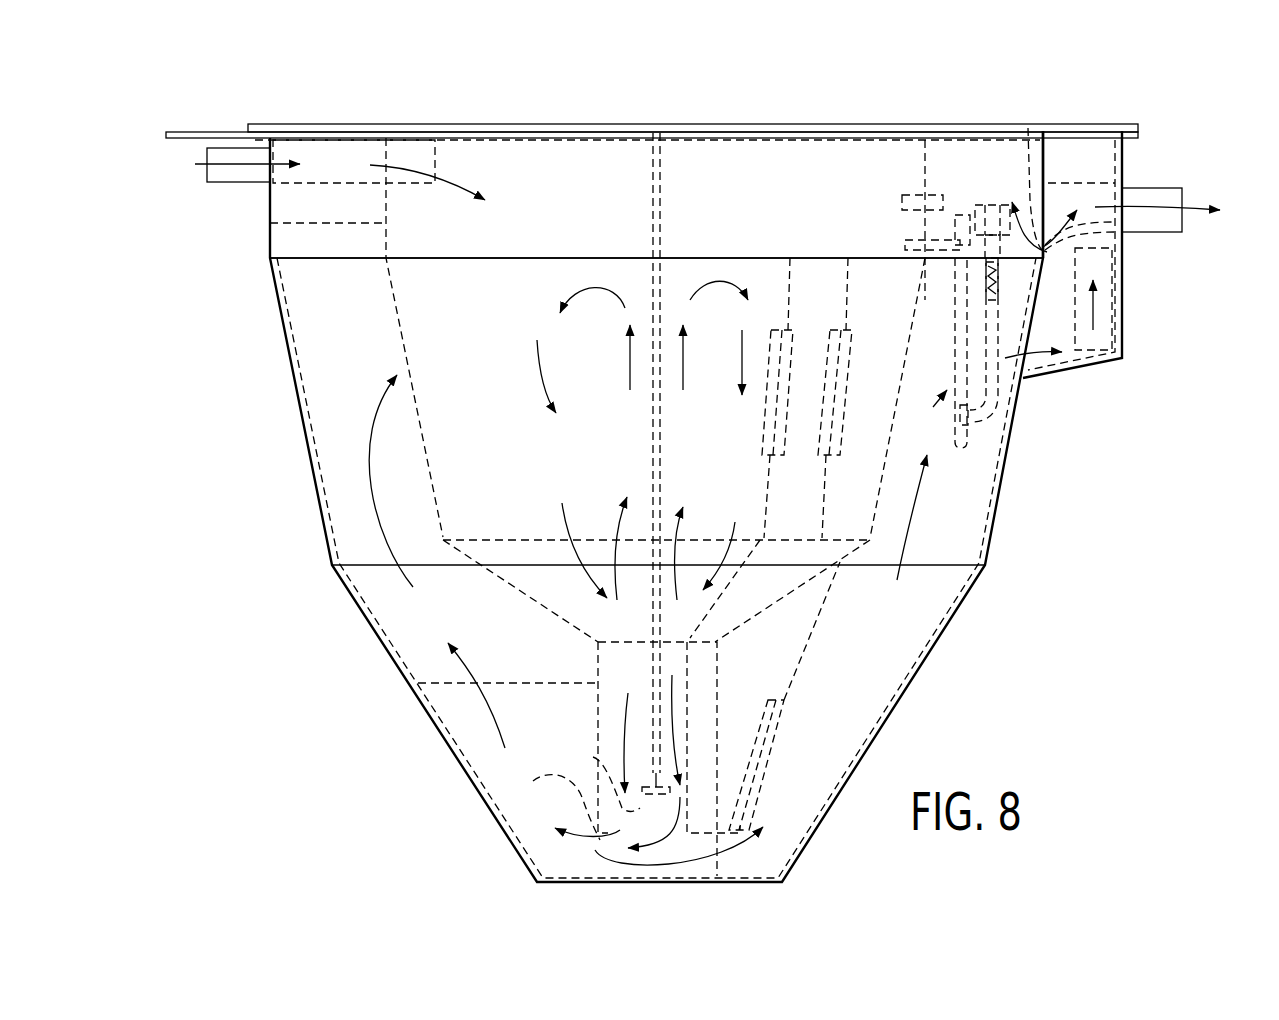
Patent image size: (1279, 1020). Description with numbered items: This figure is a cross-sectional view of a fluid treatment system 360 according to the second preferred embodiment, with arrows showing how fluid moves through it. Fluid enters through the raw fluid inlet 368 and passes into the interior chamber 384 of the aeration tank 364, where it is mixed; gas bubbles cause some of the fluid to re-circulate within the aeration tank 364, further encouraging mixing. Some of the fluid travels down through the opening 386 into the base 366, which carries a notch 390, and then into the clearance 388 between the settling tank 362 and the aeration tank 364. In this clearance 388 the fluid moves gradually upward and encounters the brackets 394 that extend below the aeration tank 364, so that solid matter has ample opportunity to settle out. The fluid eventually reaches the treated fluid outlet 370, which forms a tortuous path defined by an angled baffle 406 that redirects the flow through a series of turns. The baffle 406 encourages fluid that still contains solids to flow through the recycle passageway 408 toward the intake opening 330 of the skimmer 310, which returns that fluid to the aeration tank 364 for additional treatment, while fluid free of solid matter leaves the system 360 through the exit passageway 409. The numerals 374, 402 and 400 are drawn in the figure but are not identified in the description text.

The treatment system 360 is at (975, 598).
The tank liner wall 374 is at (1000, 520).
The settling tank 362 is at (938, 125).
The aeration tank 364 is at (828, 140).
The interior chamber 384 is at (580, 165).
The raw fluid inlet 368 is at (237, 186).
The clearance 388 is at (350, 126).
The shaft 402 is at (661, 206).
The opening 386 is at (640, 640).
The skimmer 310 is at (927, 410).
The intake opening 330 is at (1012, 222).
The recycle passageway 408 is at (1028, 128).
The exit passageway 409 is at (1045, 240).
The treated fluid outlet 370 is at (1143, 278).
The baffle 406 is at (1140, 230).
The brackets 394 is at (378, 647).
The base 366 is at (595, 705).
The tube 400 is at (593, 755).
The notch 390 is at (555, 807).